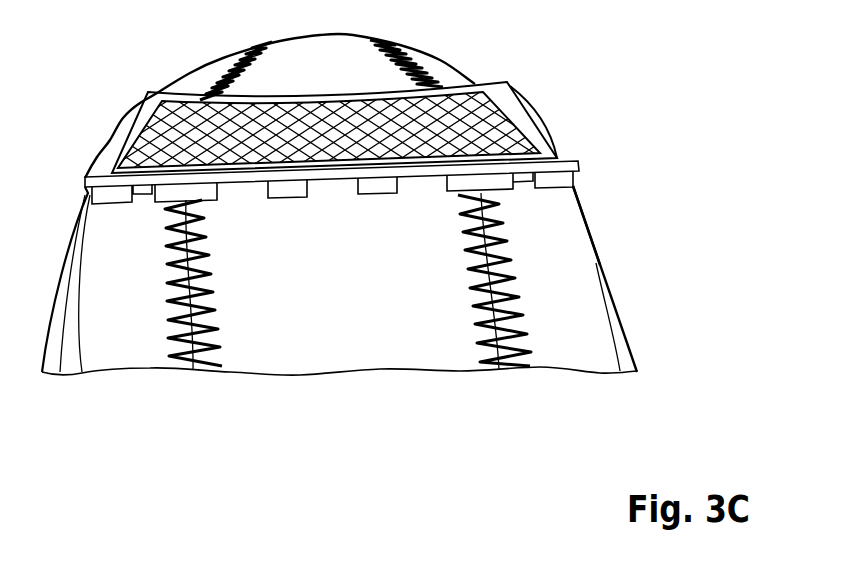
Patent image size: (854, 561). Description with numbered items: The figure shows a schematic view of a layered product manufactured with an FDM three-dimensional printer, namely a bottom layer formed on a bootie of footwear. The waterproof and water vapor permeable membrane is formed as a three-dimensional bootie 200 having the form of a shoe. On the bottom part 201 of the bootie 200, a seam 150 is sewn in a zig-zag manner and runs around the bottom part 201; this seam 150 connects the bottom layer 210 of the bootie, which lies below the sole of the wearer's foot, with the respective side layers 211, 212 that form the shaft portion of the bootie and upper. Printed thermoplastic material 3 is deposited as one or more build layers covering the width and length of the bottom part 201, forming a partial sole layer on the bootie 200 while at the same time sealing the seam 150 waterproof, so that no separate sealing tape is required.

The thermoplastic material 3 is at (545, 118).
The seam 150 is at (203, 370).
The three-dimensional bootie 200 is at (129, 343).
The bottom part 201 is at (570, 212).
The bottom layer 210 is at (364, 303).
The side layer 211 is at (146, 303).
The side layer 212 is at (587, 302).